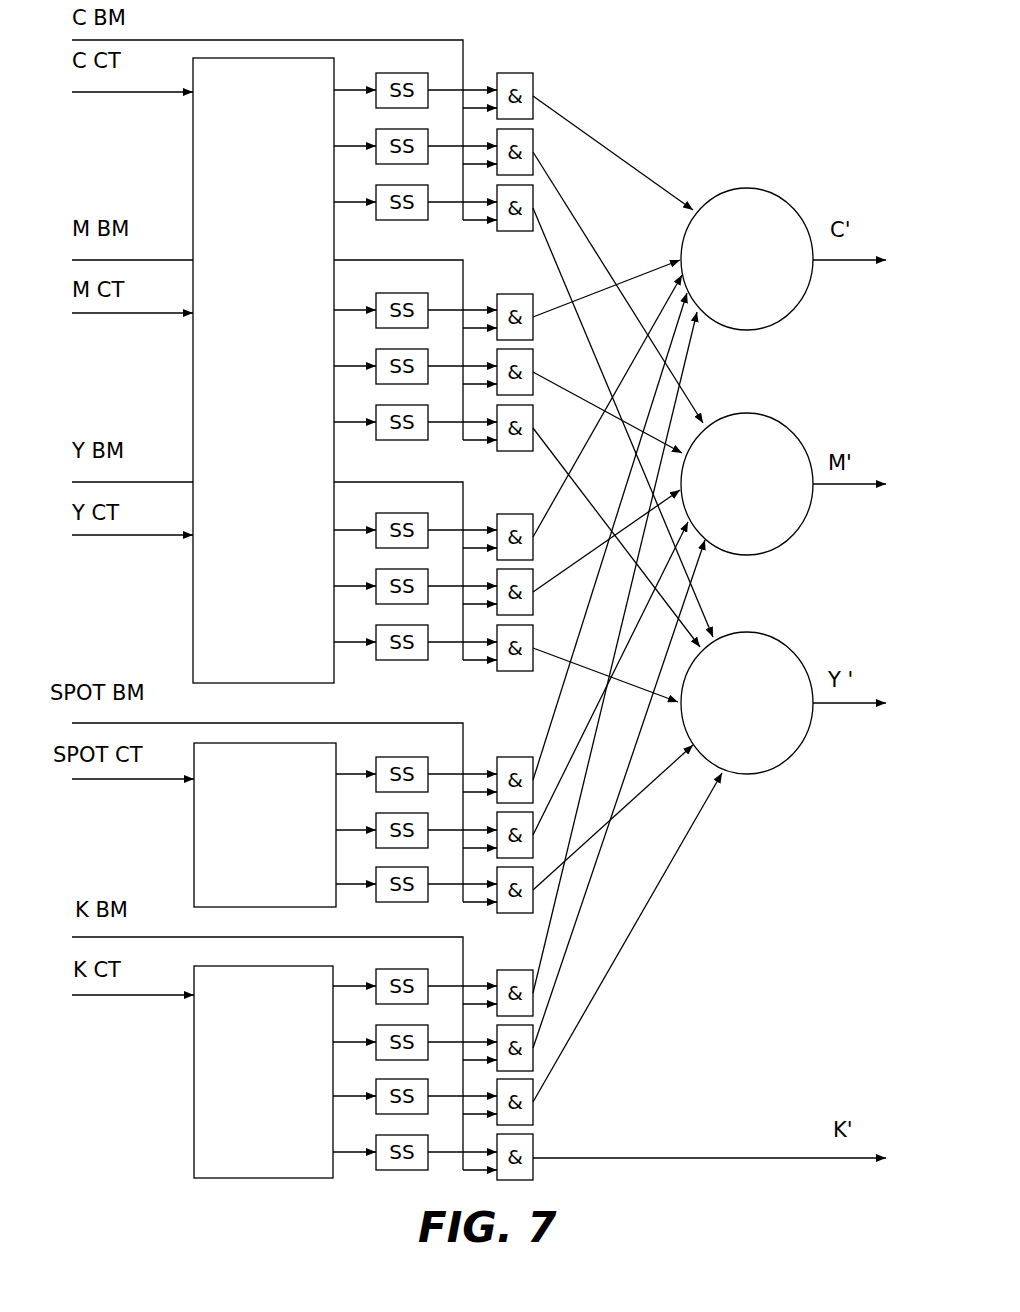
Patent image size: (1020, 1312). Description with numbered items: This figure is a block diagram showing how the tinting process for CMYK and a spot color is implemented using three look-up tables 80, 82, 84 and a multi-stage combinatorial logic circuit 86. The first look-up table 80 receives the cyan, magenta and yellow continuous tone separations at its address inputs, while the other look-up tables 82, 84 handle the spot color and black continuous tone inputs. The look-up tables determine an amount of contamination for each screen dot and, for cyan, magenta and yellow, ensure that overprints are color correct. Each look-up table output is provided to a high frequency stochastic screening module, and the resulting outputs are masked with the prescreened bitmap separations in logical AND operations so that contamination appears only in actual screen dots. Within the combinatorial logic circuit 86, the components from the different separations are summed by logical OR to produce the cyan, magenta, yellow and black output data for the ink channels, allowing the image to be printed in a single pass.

The first look-up table 80 is at (203, 630).
The look-up table 82 is at (203, 870).
The look-up table 84 is at (203, 1132).
The multi-stage combinatorial logic circuit 86 is at (678, 110).